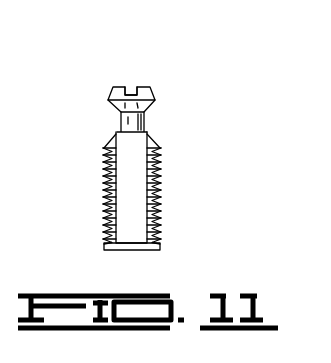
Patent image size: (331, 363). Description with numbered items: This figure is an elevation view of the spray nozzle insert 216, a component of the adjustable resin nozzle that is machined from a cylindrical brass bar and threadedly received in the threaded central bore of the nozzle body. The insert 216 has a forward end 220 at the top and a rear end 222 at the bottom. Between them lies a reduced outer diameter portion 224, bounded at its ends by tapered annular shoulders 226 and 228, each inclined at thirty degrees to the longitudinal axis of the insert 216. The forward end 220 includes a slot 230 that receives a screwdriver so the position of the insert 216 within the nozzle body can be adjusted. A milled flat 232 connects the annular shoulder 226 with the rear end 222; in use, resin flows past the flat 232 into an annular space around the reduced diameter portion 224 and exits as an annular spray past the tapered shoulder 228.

The spray nozzle insert 216 is at (149, 155).
The forward end 220 is at (126, 81).
The rear end 222 is at (143, 251).
The reduced outer diameter portion 224 is at (145, 123).
The tapered annular shoulder 226 is at (117, 133).
The tapered annular shoulder 228 is at (113, 108).
The slot 230 is at (132, 85).
The milled flat 232 is at (130, 198).